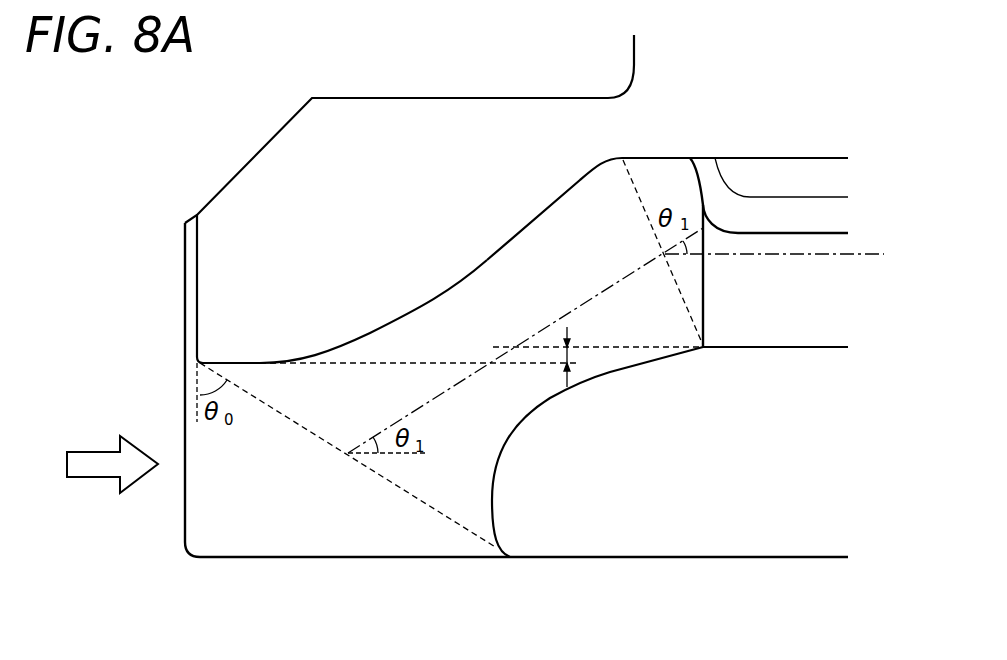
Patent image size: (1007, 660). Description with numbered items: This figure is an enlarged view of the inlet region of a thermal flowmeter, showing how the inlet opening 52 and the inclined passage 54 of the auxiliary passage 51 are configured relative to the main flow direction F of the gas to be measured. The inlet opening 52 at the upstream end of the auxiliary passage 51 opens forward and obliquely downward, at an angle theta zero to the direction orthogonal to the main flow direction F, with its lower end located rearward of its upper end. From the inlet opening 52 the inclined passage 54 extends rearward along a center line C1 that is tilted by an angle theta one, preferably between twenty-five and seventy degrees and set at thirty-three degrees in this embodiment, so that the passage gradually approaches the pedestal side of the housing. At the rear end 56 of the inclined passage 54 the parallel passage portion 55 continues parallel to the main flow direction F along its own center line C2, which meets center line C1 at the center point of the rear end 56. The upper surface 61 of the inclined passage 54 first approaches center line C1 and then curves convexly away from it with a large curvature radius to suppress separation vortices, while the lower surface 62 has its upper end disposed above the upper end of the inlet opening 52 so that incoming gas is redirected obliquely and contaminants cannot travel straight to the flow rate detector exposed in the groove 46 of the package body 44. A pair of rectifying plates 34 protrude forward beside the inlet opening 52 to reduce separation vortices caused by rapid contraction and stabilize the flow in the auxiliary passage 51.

The rectifying plate 34 is at (231, 523).
The package body 44 is at (783, 172).
The groove 46 is at (780, 315).
The auxiliary passage 51 is at (506, 243).
The inlet opening 52 is at (283, 415).
The inclined passage 54 is at (493, 290).
The parallel passage portion 55 is at (662, 180).
The rear end of the inclined passage 56 is at (633, 198).
The upper surface of the inclined passage portion 61 is at (412, 320).
The lower surface of the inclined passage portion 62 is at (511, 426).
The center line of the inclined passage C1 is at (573, 313).
The center line of the parallel passage portion C2 is at (873, 257).
The main flow direction F is at (95, 453).